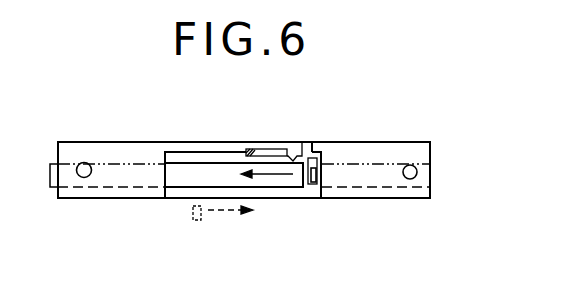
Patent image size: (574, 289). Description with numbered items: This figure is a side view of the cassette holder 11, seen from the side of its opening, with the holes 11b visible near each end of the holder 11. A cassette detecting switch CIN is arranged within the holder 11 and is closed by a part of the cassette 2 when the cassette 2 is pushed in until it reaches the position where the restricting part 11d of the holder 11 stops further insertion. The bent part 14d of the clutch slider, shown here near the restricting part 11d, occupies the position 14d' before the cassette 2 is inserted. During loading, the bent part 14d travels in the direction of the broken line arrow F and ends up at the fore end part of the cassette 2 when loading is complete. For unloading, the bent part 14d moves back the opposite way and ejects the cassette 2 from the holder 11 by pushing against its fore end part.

The cassette 2 is at (108, 173).
The cassette holder 11 is at (72, 200).
The positioning holes 11b is at (84, 178).
The restricting part 11d is at (310, 152).
The bent part 14d is at (330, 194).
The position of the bent part before cassette insertion 14d' is at (215, 226).
The cassette detecting switch CIN is at (255, 150).
The broken line arrow F is at (237, 216).